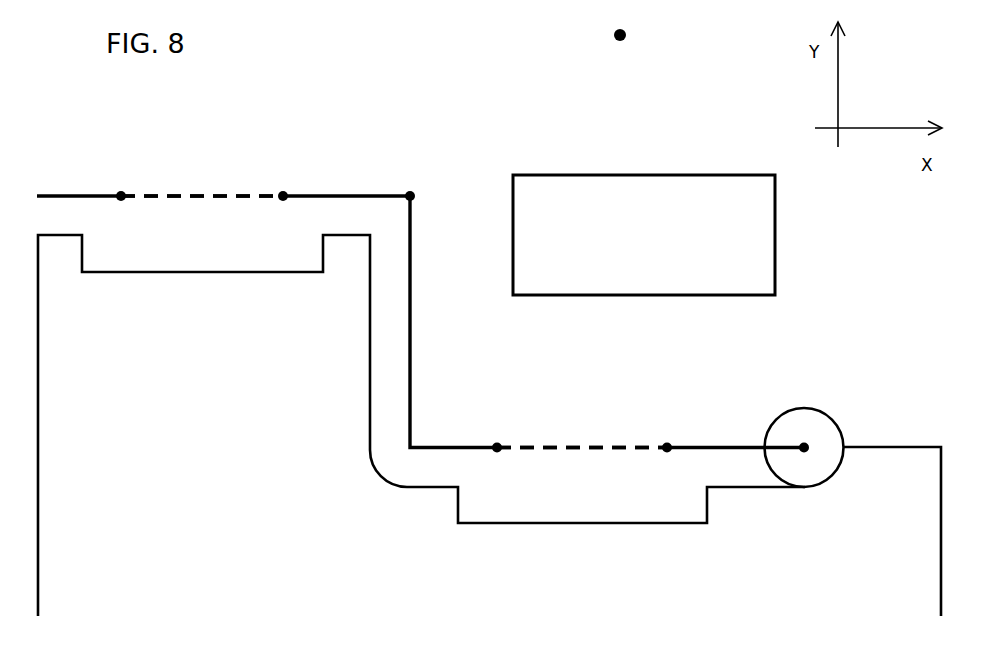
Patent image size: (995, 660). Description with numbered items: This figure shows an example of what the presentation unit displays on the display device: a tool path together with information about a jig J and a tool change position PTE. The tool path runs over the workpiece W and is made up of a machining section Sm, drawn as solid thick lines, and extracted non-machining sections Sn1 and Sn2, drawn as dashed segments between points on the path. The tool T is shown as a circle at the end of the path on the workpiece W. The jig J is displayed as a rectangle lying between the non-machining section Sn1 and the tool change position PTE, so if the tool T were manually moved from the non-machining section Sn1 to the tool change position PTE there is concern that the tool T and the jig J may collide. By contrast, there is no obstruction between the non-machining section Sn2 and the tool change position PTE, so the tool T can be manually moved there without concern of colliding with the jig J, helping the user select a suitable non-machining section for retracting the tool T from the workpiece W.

The workpiece W is at (898, 447).
The tool T is at (828, 416).
The machining section Sm is at (412, 311).
The non-machining section Sn1 is at (572, 447).
The non-machining section Sn2 is at (196, 193).
The jig J is at (775, 220).
The tool change position PTE is at (626, 38).